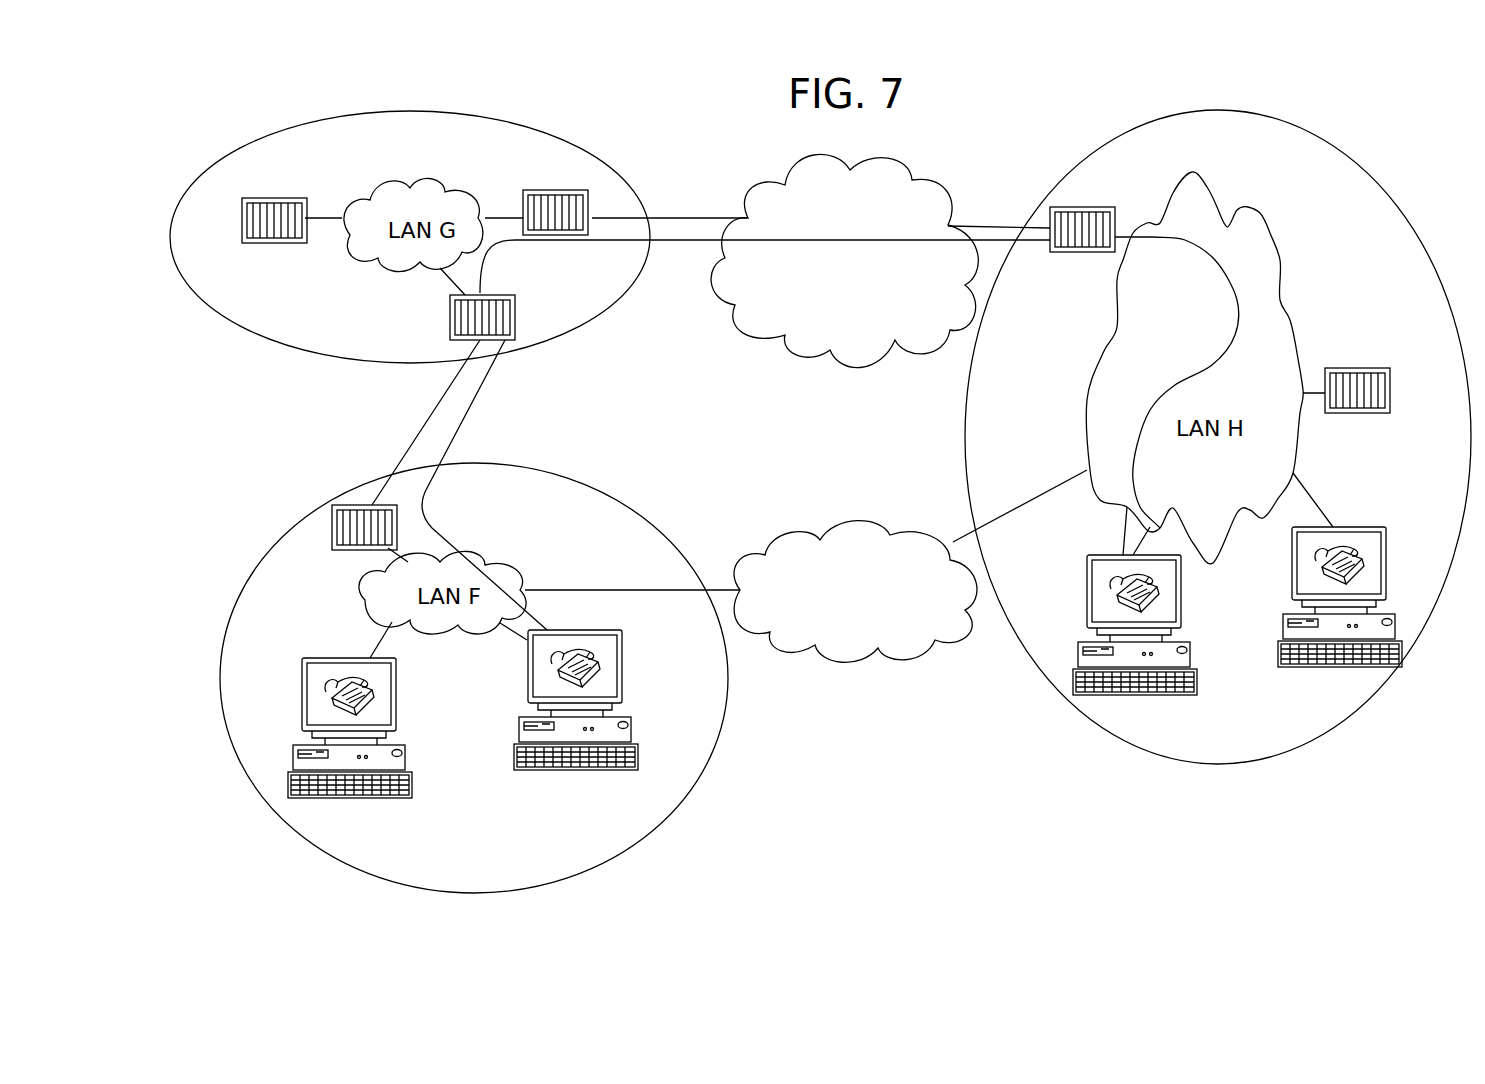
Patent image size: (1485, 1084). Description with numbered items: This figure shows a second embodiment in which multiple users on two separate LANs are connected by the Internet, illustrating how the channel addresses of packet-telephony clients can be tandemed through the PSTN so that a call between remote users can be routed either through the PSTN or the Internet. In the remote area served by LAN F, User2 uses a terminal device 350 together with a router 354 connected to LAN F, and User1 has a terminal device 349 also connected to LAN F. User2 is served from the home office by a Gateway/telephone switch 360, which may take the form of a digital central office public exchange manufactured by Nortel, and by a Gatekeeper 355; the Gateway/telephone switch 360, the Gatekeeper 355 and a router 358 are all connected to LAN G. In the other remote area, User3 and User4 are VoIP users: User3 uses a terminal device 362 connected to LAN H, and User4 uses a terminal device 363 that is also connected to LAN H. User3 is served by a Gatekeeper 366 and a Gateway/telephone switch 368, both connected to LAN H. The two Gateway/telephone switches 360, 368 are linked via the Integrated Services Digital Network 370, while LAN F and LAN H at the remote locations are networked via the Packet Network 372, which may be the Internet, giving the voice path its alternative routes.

The H.323 terminal device 349 is at (397, 692).
The H.323 terminal device 350 is at (623, 667).
The router 354 is at (348, 505).
The Gatekeeper 355 is at (288, 200).
The router 358 is at (520, 317).
The Gateway/telephone switch 360 is at (522, 207).
The H.323 terminal device 362 is at (1085, 570).
The H.323 terminal device 363 is at (1385, 545).
The Gatekeeper 366 is at (1340, 417).
The Gateway/telephone switch 368 is at (1070, 253).
The Integrated Services Digital Network 370 is at (772, 348).
The Packet Network 372 is at (902, 650).